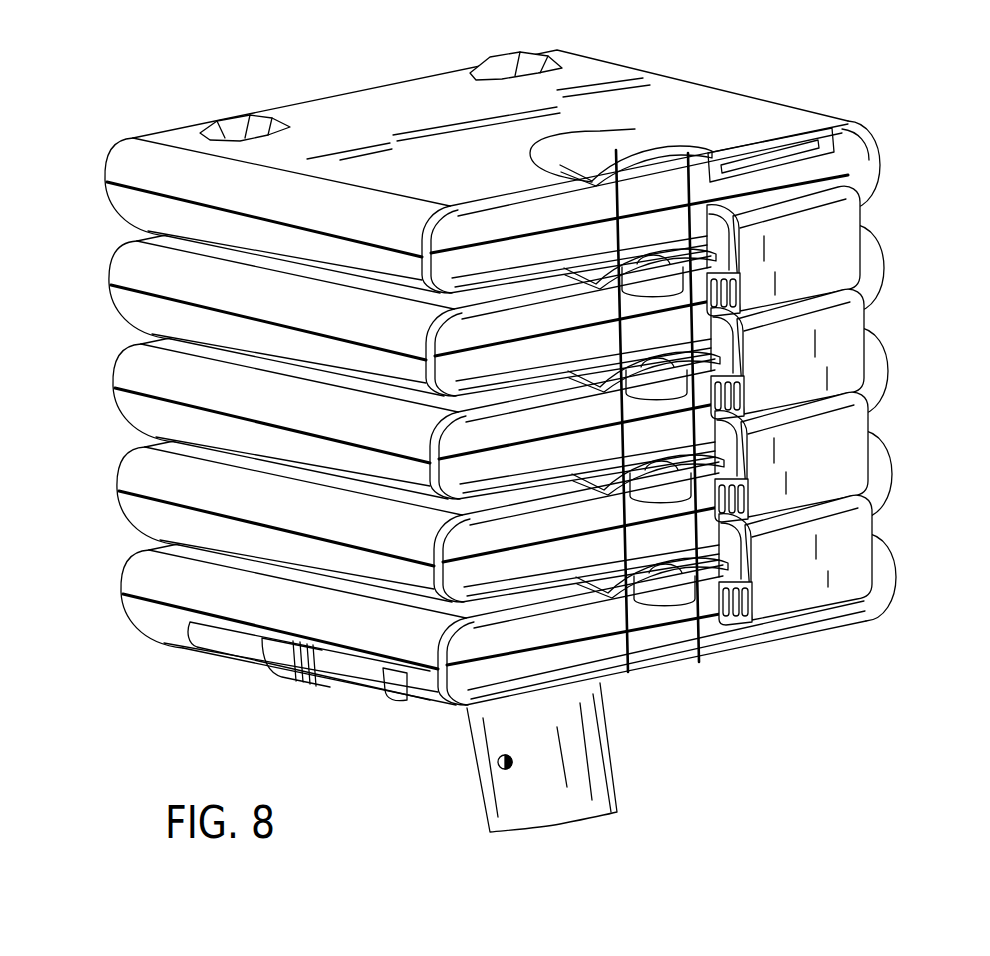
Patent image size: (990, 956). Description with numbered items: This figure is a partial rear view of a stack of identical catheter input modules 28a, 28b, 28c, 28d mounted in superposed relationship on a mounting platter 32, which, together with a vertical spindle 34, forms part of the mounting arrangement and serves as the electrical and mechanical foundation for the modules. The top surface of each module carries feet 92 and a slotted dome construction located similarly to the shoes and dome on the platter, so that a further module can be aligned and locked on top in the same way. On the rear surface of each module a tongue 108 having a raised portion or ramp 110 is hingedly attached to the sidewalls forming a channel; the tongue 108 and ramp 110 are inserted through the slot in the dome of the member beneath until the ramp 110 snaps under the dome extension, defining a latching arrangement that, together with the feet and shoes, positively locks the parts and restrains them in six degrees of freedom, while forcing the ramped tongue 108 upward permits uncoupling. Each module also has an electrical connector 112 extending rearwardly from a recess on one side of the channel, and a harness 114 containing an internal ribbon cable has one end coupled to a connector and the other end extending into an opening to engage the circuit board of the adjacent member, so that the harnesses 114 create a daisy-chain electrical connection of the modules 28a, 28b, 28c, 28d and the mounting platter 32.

The catheter input module 28a is at (882, 459).
The catheter input module 28b is at (882, 356).
The catheter input module 28c is at (880, 253).
The catheter input module 28d is at (873, 147).
The mounting platter 32 is at (795, 647).
The vertical spindle 34 is at (612, 767).
The feet 92 is at (233, 128).
The tongue 108 is at (652, 600).
The ramp 110 is at (665, 580).
The electrical connector 112 is at (768, 156).
The harness 114 is at (842, 261).